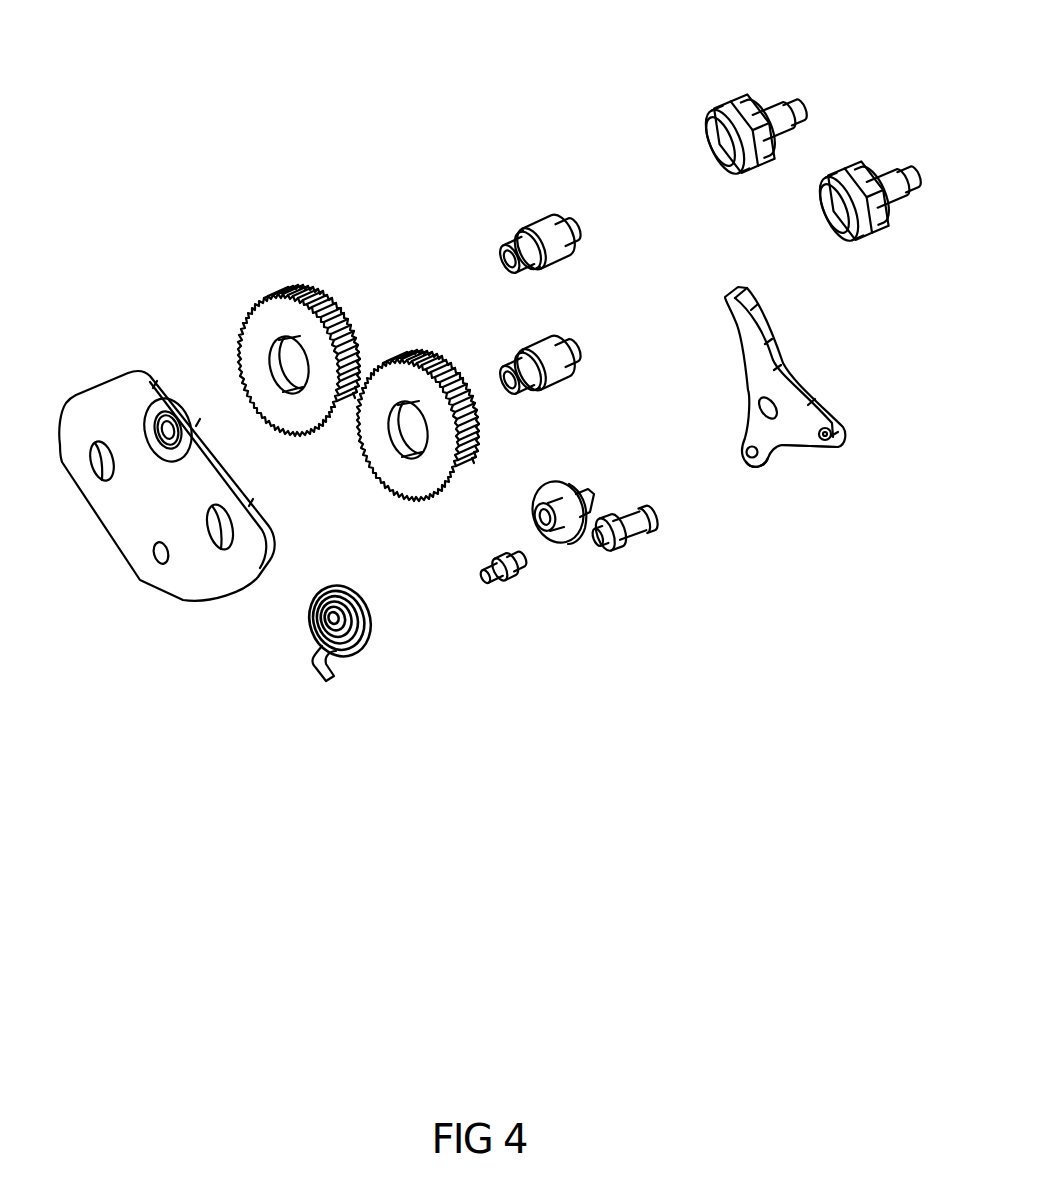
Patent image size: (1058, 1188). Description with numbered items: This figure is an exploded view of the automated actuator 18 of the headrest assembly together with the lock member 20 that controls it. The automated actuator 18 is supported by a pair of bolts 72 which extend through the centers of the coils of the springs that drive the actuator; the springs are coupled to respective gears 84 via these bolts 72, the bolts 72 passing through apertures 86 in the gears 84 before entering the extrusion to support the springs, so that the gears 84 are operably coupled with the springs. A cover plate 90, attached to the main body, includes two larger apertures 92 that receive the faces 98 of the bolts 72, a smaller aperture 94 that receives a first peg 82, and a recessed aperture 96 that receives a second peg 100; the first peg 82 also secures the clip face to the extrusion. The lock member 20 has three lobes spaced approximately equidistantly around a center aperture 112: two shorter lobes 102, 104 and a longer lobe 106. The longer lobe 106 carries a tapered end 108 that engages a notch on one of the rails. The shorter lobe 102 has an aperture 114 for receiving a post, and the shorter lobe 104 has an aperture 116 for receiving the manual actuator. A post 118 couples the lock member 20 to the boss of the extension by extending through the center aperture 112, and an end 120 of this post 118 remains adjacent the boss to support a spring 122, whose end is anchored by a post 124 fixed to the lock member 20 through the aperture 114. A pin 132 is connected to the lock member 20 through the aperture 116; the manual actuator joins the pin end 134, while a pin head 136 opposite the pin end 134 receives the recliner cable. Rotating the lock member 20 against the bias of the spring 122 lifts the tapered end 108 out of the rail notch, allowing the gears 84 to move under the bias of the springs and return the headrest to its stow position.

The automated actuator 18 is at (289, 155).
The lock member 20 is at (805, 391).
The bolts 72 is at (728, 109).
The first peg 82 is at (540, 352).
The gears 84 is at (413, 357).
The apertures 86 is at (397, 443).
The cover plate 90 is at (125, 515).
The larger apertures 92 is at (102, 473).
The smaller aperture 94 is at (163, 560).
The recessed aperture 96 is at (160, 420).
The faces 98 is at (725, 148).
The second peg 100 is at (540, 227).
The shorter lobe 102 is at (790, 448).
The shorter lobe 104 is at (833, 447).
The longer lobe 106 is at (760, 305).
The tapered end 108 is at (728, 303).
The center aperture 112 is at (773, 403).
The aperture 114 is at (745, 450).
The aperture 116 is at (828, 435).
The post 118 is at (524, 480).
The end 120 is at (540, 520).
The spring 122 is at (362, 655).
The post 124 is at (503, 578).
The pin 132 is at (652, 564).
The pin end 134 is at (643, 520).
The pin head 136 is at (598, 548).